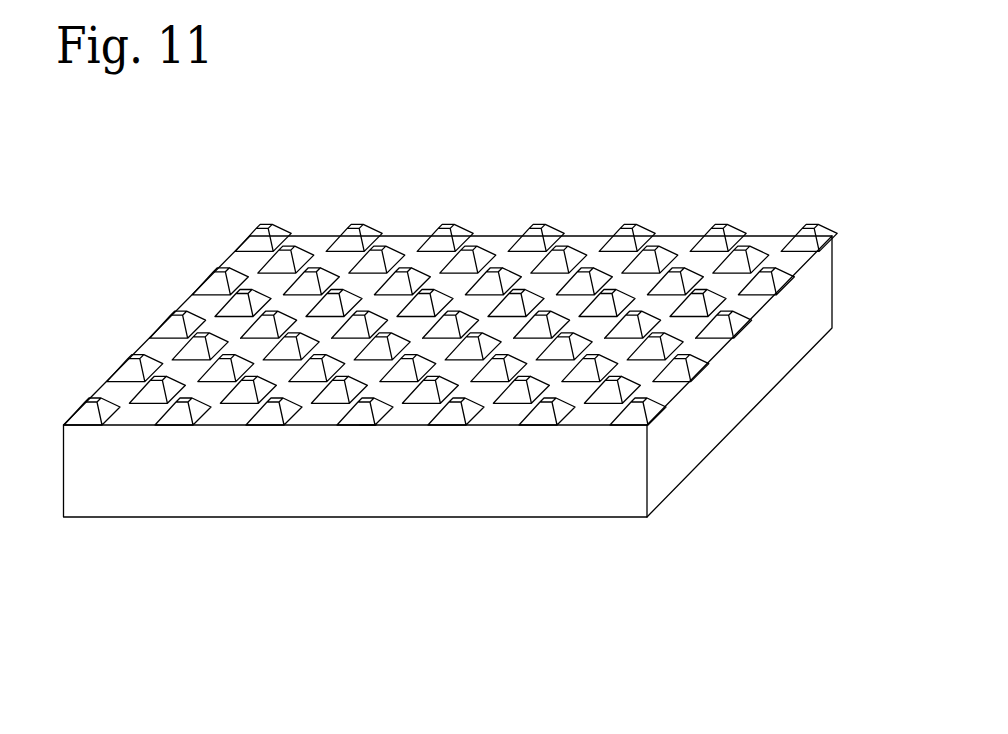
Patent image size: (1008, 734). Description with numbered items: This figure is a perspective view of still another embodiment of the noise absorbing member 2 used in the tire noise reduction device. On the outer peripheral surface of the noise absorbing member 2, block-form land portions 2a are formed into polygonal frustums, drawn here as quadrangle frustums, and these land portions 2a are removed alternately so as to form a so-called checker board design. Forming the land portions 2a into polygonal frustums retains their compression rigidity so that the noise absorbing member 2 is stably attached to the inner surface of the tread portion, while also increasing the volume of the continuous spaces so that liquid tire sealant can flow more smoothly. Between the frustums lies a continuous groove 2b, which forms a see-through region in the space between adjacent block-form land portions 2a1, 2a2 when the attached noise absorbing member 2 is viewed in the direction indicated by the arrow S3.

The noise absorbing member 2 is at (755, 229).
The land portion 2a is at (353, 226).
The continuous groove 2b is at (490, 243).
The block-form land portion 2a1 is at (352, 420).
The block-form land portion 2a2 is at (423, 397).
The viewing direction arrow S3 is at (353, 466).